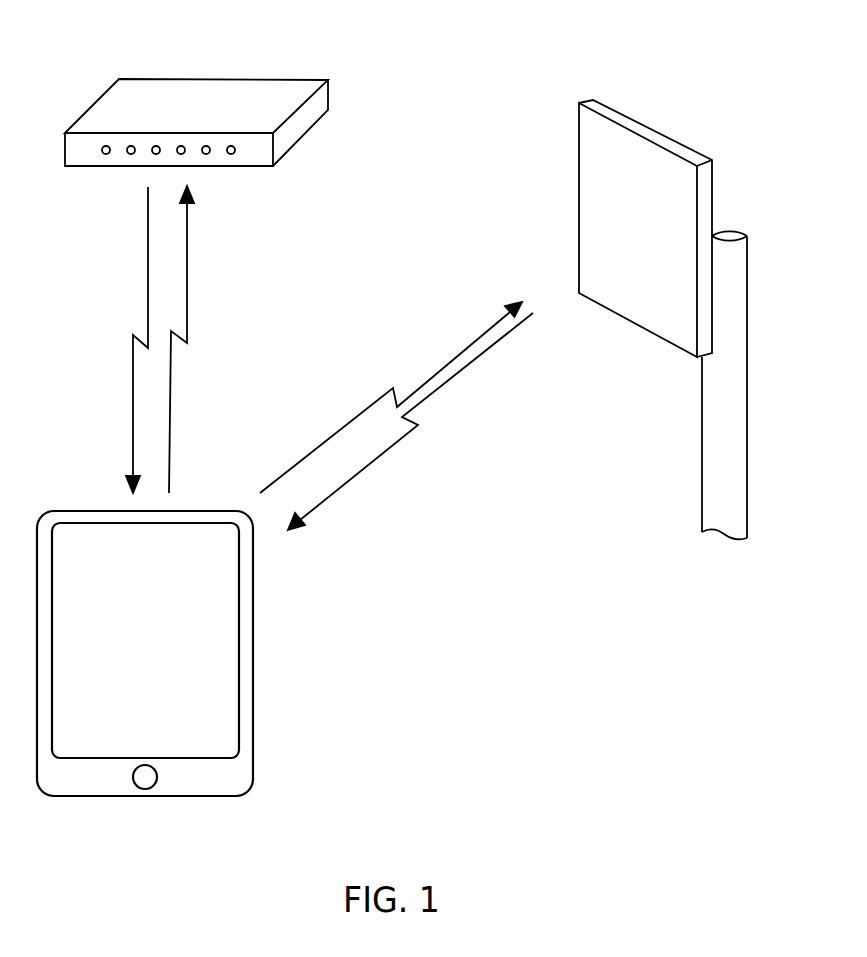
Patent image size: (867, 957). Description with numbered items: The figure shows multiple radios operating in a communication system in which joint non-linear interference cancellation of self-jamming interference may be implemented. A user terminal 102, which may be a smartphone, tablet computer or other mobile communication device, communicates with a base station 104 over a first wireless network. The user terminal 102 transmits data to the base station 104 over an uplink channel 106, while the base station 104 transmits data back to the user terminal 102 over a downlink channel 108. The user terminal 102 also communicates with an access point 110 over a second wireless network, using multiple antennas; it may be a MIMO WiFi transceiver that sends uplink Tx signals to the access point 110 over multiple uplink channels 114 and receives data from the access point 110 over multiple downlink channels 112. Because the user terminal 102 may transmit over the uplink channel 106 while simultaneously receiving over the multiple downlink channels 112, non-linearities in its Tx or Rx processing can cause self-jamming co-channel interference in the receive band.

The user terminal 102 is at (145, 797).
The base station 104 is at (645, 128).
The uplink channel 106 is at (443, 362).
The downlink channel 108 is at (465, 367).
The access point 110 is at (238, 79).
The multiple downlink channels 112 is at (148, 270).
The multiple uplink channels 114 is at (187, 260).